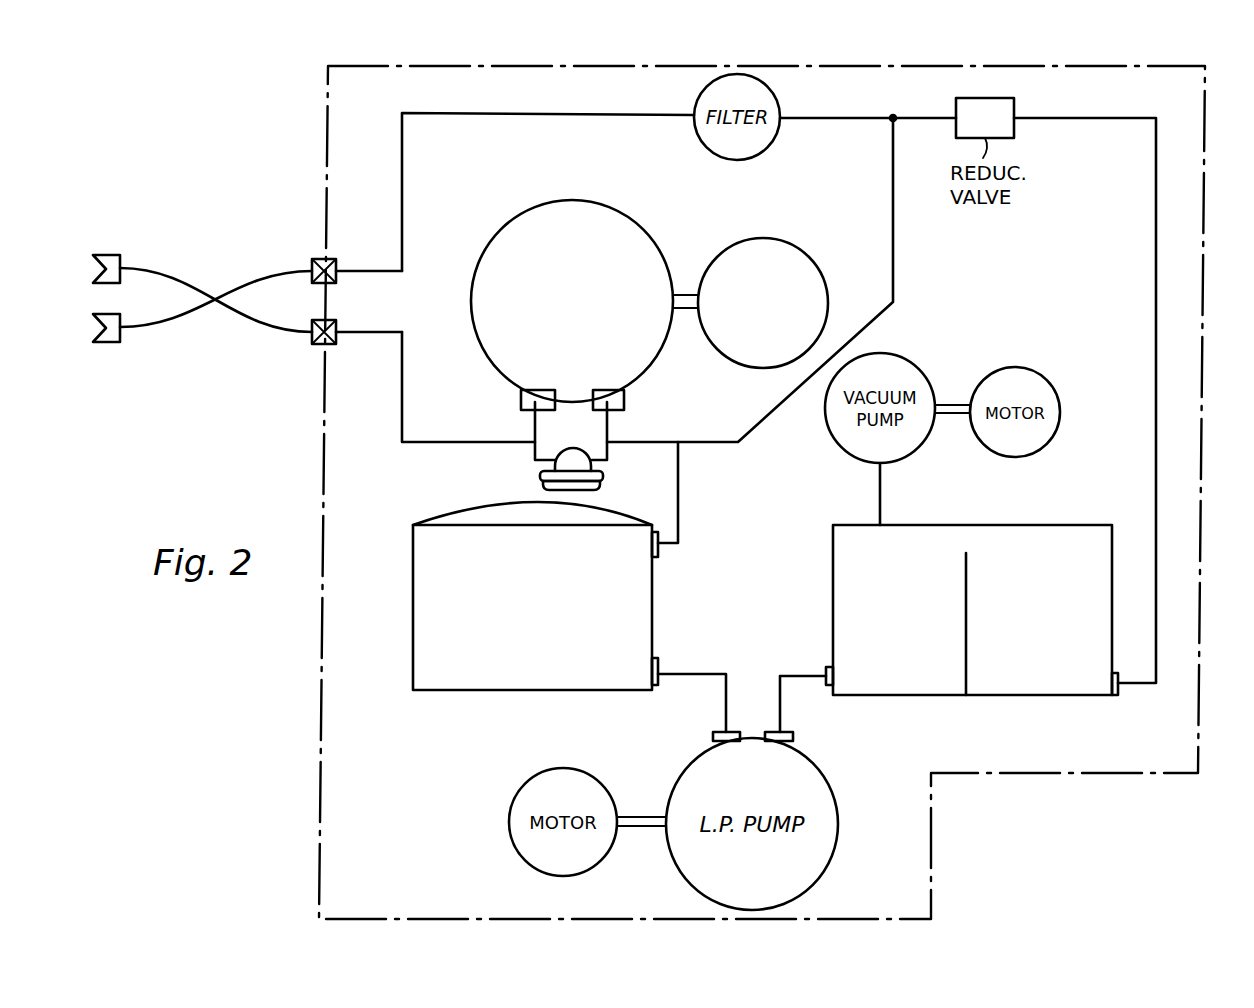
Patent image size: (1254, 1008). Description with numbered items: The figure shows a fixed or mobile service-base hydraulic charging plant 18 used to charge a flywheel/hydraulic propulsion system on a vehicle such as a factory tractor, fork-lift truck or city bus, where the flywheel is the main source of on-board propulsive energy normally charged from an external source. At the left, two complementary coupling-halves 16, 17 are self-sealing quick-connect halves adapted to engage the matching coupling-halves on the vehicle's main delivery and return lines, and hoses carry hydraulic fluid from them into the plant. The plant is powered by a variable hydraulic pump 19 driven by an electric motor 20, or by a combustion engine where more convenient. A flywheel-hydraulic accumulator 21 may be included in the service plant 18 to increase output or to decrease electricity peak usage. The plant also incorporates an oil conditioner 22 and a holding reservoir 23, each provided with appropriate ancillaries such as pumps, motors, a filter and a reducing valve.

The complementary coupling-half 16 is at (108, 343).
The complementary coupling-half 17 is at (106, 254).
The service-base hydraulic charging plant 18 is at (338, 106).
The variable hydraulic pump 19 is at (631, 244).
The electric motor 20 is at (790, 260).
The flywheel-hydraulic accumulator 21 is at (604, 484).
The oil conditioner 22 is at (832, 573).
The holding reservoir 23 is at (645, 602).